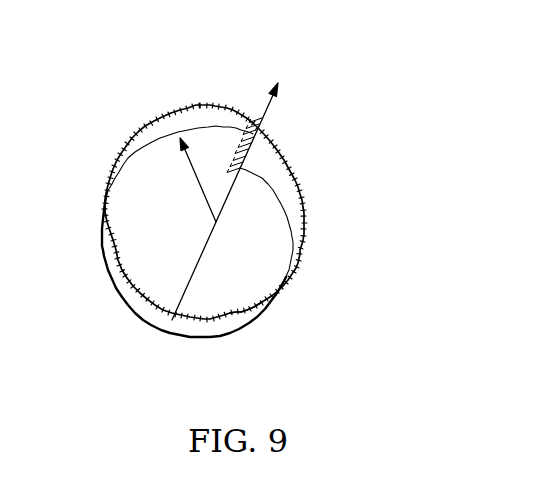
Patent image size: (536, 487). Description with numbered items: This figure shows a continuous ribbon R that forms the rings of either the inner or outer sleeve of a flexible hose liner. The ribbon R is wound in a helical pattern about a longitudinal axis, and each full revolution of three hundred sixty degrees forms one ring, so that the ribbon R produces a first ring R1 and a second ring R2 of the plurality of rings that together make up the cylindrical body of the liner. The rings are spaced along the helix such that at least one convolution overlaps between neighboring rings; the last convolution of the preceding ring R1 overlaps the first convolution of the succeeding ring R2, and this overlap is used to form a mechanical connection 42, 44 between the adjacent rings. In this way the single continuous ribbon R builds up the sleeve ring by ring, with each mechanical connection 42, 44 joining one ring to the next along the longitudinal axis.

The mechanical connection 42 is at (246, 212).
The mechanical connection 44 is at (233, 176).
The continuous ribbon R is at (167, 113).
The first ring R1 is at (303, 193).
The second ring R2 is at (279, 297).